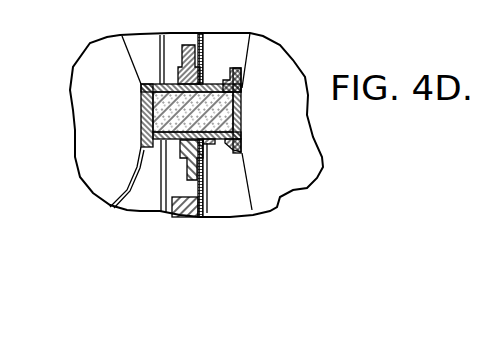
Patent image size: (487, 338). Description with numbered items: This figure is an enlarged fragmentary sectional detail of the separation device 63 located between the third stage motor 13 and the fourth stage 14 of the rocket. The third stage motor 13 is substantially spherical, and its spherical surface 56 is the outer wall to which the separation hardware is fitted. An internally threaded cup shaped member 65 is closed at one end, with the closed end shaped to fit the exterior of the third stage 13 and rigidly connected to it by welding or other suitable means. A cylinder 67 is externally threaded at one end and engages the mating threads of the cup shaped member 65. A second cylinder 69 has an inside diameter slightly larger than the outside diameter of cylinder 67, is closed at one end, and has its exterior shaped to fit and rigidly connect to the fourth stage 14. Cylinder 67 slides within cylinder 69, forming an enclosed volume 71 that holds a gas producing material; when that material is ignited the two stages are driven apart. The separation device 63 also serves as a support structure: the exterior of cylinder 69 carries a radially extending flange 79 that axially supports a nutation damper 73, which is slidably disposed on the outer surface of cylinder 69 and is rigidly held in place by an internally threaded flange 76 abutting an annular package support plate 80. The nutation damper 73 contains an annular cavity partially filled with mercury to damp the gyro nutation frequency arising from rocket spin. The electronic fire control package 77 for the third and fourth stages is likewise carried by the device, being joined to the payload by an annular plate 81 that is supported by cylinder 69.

The third stage motor 13 is at (307, 165).
The fourth stage 14 is at (105, 180).
The spherical surface 56 is at (245, 198).
The separation device 63 is at (223, 60).
The cup shaped member 65 is at (241, 146).
The cylinder 67 is at (216, 142).
The cylinder 69 is at (141, 117).
The enclosed volume 71 is at (233, 106).
The nutation damper 73 is at (190, 178).
The internally threaded flange 76 is at (203, 77).
The electronic fire control package 77 is at (180, 208).
The radially extending flange 79 is at (178, 72).
The annular package support plate 80 is at (213, 217).
The annular plate 81 is at (160, 75).